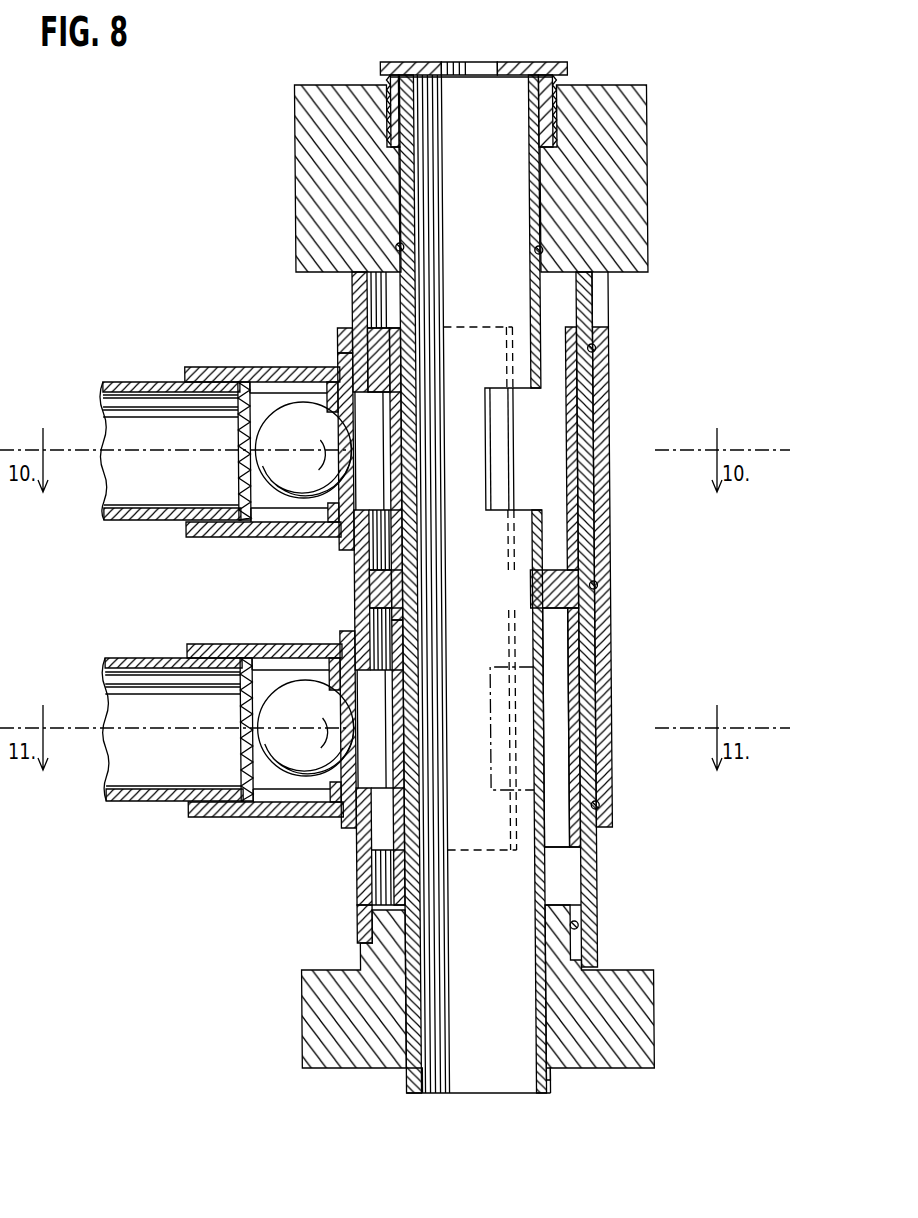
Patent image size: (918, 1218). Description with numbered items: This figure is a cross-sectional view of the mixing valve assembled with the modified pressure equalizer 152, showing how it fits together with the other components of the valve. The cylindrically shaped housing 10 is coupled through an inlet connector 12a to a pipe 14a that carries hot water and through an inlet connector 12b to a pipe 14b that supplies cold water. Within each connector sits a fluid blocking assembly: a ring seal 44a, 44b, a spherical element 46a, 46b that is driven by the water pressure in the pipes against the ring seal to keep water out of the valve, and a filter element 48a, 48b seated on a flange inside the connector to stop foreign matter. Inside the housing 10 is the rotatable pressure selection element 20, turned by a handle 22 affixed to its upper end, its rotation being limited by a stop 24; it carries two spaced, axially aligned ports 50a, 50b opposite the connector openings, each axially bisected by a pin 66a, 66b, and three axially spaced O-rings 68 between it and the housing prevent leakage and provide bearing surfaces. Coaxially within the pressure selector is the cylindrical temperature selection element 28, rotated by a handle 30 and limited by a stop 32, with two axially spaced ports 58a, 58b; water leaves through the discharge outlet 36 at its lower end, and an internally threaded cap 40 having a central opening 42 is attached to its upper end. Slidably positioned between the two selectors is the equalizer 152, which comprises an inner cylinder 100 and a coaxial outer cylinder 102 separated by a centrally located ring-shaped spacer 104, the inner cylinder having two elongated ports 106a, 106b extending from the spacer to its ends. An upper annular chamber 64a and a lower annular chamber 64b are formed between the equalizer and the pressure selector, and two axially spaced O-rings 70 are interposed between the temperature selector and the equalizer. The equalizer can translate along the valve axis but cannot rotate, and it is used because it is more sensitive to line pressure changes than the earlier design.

The housing 10 is at (607, 538).
The inlet connector 12a is at (217, 367).
The inlet connector 12b is at (217, 644).
The pipe 14a is at (130, 382).
The pipe 14b is at (130, 658).
The pressure selection element 20 is at (606, 299).
The handle 22 is at (636, 132).
The stop 24 is at (345, 342).
The temperature selection element 28 is at (556, 889).
The handle 30 is at (640, 1002).
The stop 32 is at (362, 957).
The discharge outlet 36 is at (552, 1085).
The internally threaded cap 40 is at (556, 66).
The opening 42 is at (486, 62).
The ring seal 44a is at (338, 540).
The ring seal 44b is at (338, 812).
The spherical element 46a is at (266, 456).
The spherical element 46b is at (266, 733).
The filter element 48a is at (242, 430).
The filter element 48b is at (242, 708).
The port 50a is at (376, 415).
The port 50b is at (380, 770).
The port 58a is at (488, 398).
The port 58b is at (575, 704).
The upper annular chamber 64a is at (556, 391).
The lower annular chamber 64b is at (558, 822).
The pin 66a is at (366, 500).
The pin 66b is at (373, 677).
The O-ring 68 is at (597, 350).
The O-ring 70 is at (536, 250).
The inner cylinder 100 is at (415, 338).
The outer cylinder 102 is at (574, 490).
The ring-shaped spacer 104 is at (562, 597).
The elongated port 106a is at (510, 497).
The elongated port 106b is at (610, 666).
The modified pressure equalizer 152 is at (498, 436).